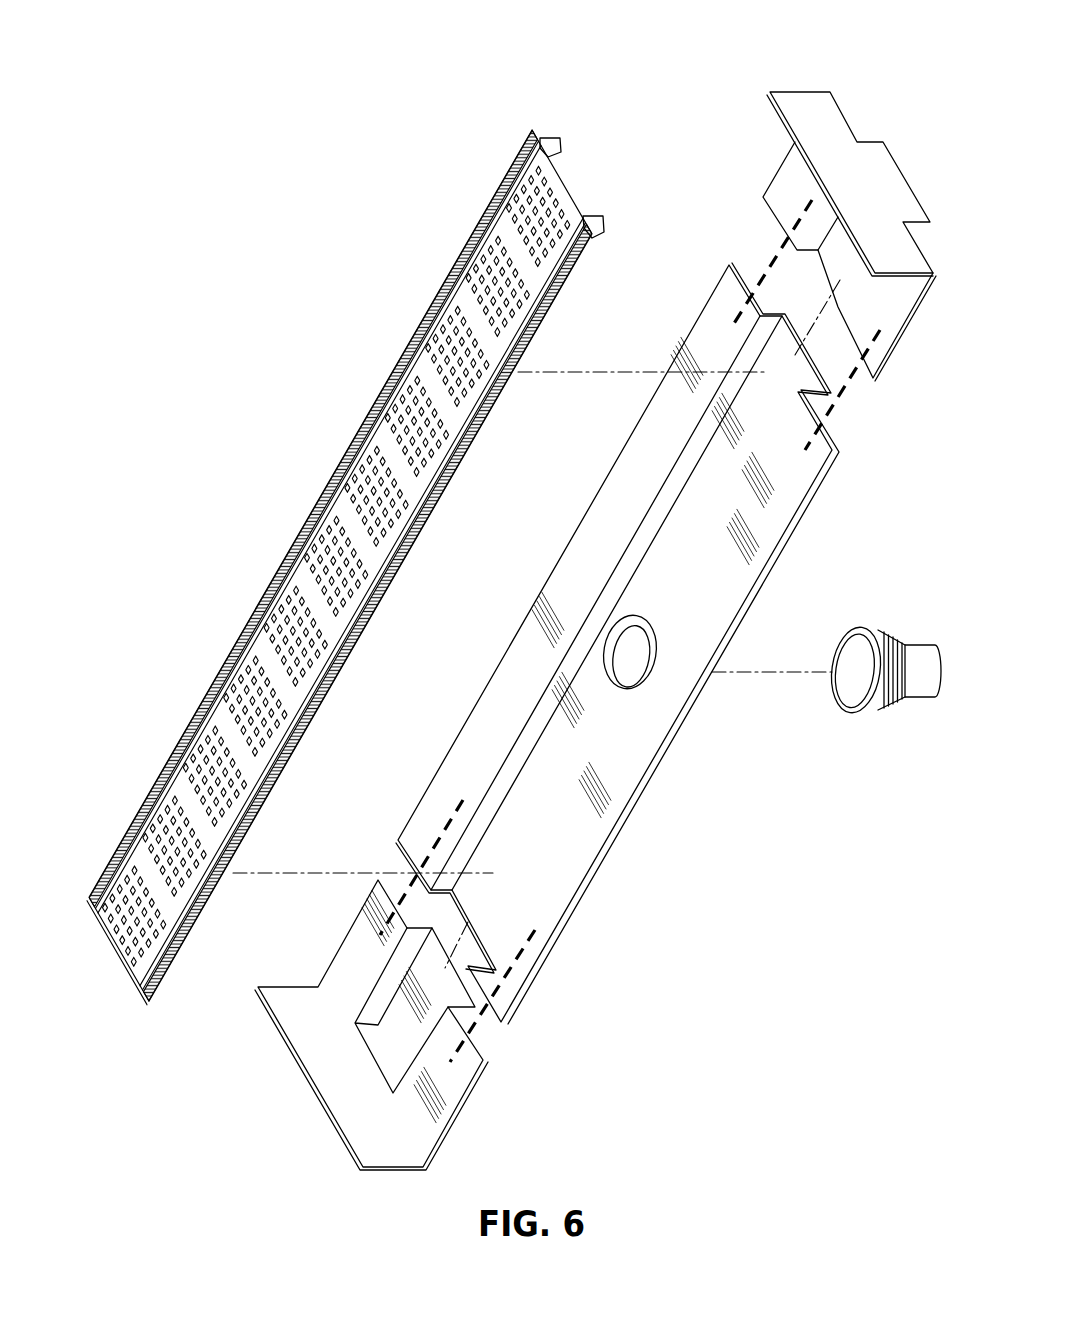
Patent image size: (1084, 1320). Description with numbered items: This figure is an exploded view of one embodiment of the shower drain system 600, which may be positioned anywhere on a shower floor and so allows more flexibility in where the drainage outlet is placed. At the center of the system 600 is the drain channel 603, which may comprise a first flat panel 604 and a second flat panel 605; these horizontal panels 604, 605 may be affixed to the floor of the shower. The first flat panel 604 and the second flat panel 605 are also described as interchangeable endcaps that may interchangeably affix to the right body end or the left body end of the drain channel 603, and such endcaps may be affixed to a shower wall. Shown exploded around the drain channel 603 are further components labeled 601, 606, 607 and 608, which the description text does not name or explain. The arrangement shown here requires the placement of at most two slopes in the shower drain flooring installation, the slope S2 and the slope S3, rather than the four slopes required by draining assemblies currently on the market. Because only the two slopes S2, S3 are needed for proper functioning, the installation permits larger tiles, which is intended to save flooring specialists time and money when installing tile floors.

The system 600 is at (144, 116).
The perforated panel 601 is at (398, 384).
The drain channel 603 is at (688, 302).
The first flat panel 604 is at (602, 508).
The second flat panel 605 is at (740, 570).
The end bracket 606 is at (805, 100).
The end bracket 607 is at (298, 1027).
The connector 608 is at (857, 705).
The slope S2 is at (539, 543).
The slope S3 is at (710, 743).